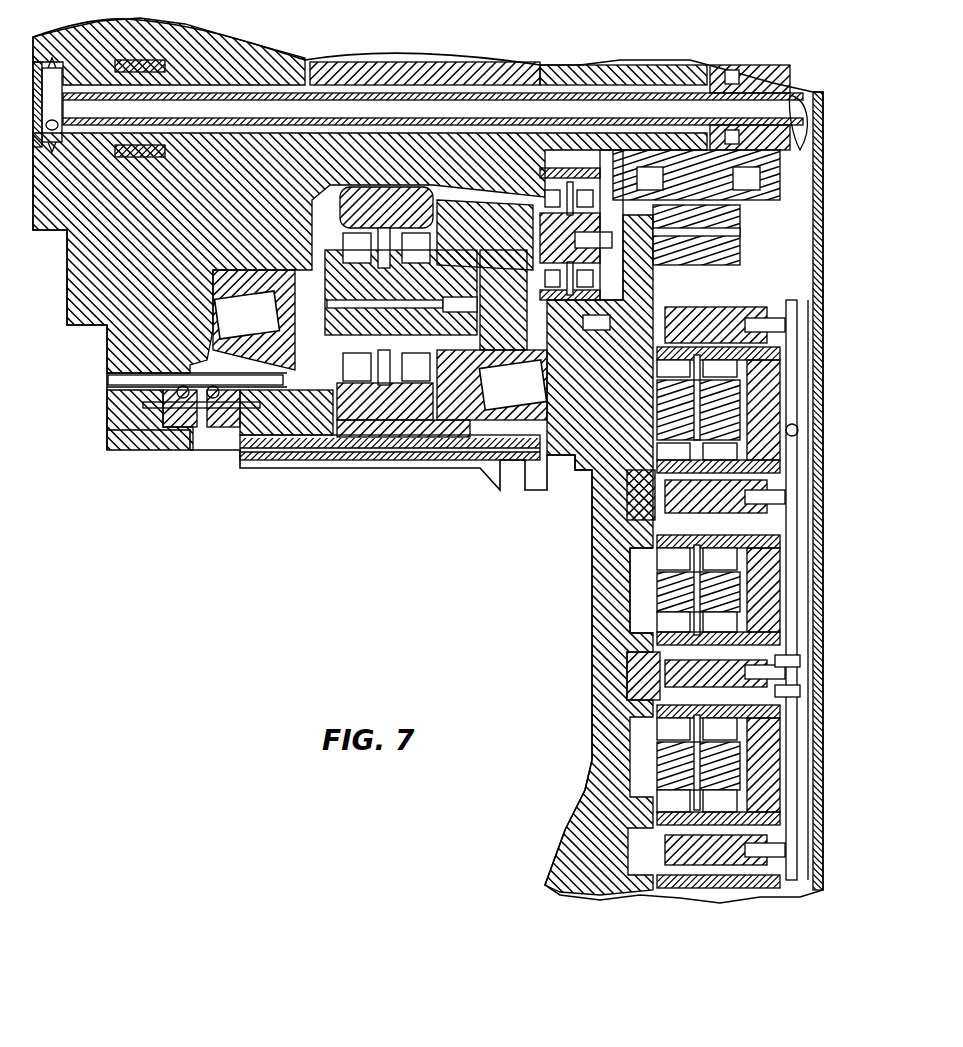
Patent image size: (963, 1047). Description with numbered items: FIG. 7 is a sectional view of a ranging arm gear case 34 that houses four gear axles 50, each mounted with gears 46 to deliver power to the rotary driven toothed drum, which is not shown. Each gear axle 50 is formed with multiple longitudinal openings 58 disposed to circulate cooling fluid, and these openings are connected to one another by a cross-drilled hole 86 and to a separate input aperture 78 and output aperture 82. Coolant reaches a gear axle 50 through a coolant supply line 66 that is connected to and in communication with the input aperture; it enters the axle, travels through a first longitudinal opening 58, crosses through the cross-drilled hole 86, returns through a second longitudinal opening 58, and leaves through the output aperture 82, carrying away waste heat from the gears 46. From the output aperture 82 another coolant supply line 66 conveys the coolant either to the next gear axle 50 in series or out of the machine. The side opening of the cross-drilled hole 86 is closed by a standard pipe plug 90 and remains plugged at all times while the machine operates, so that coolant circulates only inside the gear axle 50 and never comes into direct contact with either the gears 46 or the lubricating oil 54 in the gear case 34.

The gear case 34 is at (596, 545).
The lubricating oil 54 is at (637, 572).
The gears 46 is at (653, 600).
The gear axle 50 is at (627, 667).
The cross-drilled hole 86 is at (655, 678).
The pipe plug 90 is at (690, 666).
The longitudinal openings 58 is at (683, 717).
The output aperture 82 is at (793, 660).
The input aperture 78 is at (793, 690).
The coolant supply line 66 is at (800, 745).